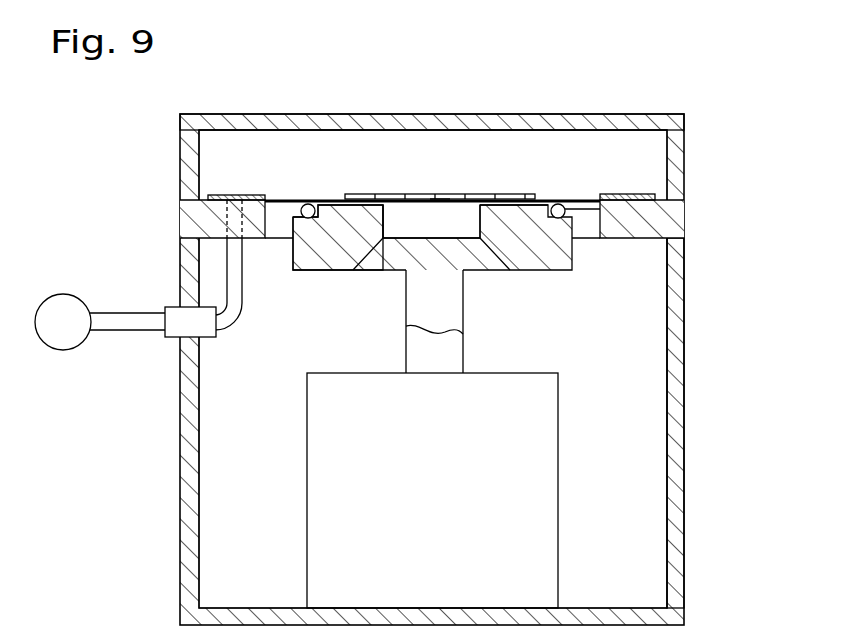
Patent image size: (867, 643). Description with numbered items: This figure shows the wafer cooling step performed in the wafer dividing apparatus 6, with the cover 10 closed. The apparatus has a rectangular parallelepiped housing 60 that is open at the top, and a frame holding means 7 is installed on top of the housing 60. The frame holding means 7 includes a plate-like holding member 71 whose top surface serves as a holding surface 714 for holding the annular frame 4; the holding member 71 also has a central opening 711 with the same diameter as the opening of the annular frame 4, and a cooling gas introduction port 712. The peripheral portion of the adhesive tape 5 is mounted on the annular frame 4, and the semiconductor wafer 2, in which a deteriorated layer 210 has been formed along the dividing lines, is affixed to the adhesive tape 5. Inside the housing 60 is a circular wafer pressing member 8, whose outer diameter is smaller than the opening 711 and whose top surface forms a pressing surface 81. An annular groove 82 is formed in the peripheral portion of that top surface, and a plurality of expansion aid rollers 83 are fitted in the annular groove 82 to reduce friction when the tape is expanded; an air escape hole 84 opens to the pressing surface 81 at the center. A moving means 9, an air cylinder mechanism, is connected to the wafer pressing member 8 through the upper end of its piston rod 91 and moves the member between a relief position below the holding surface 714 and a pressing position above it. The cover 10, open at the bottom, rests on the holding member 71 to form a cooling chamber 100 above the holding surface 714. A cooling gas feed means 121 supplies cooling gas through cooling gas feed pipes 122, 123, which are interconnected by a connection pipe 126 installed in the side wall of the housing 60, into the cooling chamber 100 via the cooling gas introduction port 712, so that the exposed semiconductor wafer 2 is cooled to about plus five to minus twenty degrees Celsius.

The semiconductor wafer 2 is at (490, 190).
The annular frame 4 is at (218, 195).
The adhesive tape 5 is at (286, 200).
The wafer dividing apparatus 6 is at (694, 84).
The frame holding means 7 is at (472, 227).
The wafer pressing member 8 is at (466, 232).
The moving means 9 is at (640, 396).
The cover 10 is at (504, 112).
The housing 60 is at (676, 428).
The holding member 71 is at (680, 210).
The pressing surface 81 is at (517, 204).
The annular groove 82 is at (324, 214).
The expansion aid rollers 83 is at (309, 204).
The air escape hole 84 is at (400, 212).
The piston rod 91 is at (465, 352).
The cooling chamber 100 is at (383, 143).
The cooling gas feed means 121 is at (67, 293).
The cooling gas feed pipe 122 is at (130, 312).
The cooling gas feed pipe 123 is at (240, 295).
The connection pipe 126 is at (177, 338).
The deteriorated layer 210 is at (438, 194).
The opening 711 is at (566, 208).
The cooling gas introduction port 712 is at (242, 197).
The holding surface 714 is at (621, 194).